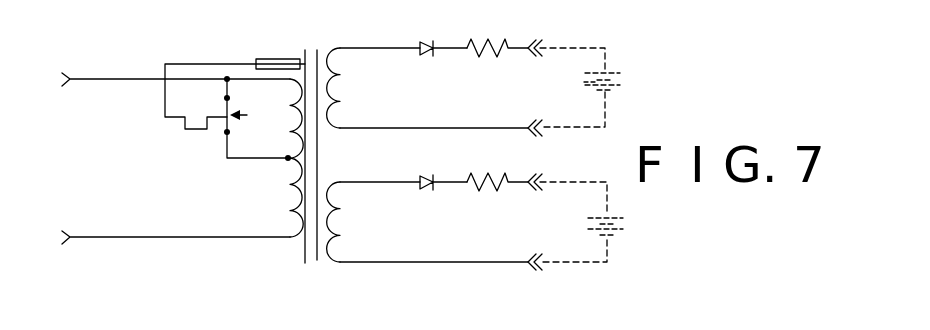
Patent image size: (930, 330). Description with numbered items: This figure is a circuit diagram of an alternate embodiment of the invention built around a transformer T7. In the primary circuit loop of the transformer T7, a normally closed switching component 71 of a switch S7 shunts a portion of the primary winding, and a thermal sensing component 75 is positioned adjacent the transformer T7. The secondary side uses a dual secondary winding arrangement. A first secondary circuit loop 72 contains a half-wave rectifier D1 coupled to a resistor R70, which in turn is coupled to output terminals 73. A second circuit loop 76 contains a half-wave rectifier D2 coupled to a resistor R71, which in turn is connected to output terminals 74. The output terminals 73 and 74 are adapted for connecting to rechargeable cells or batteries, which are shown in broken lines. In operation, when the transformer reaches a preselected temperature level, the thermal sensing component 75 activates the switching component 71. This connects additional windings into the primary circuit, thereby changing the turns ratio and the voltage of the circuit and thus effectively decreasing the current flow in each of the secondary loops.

The thermal sensing component 75 is at (197, 63).
The switching component 71 is at (227, 150).
The switch S7 is at (251, 116).
The transformer T7 is at (316, 55).
The first secondary circuit loop 72 is at (360, 64).
The half-wave rectifier D1 is at (420, 44).
The resistor R70 is at (469, 41).
The output terminals 73 is at (545, 42).
The second circuit loop 76 is at (383, 237).
The half-wave rectifier D2 is at (420, 178).
The resistor R71 is at (477, 175).
The output terminals 74 is at (538, 178).